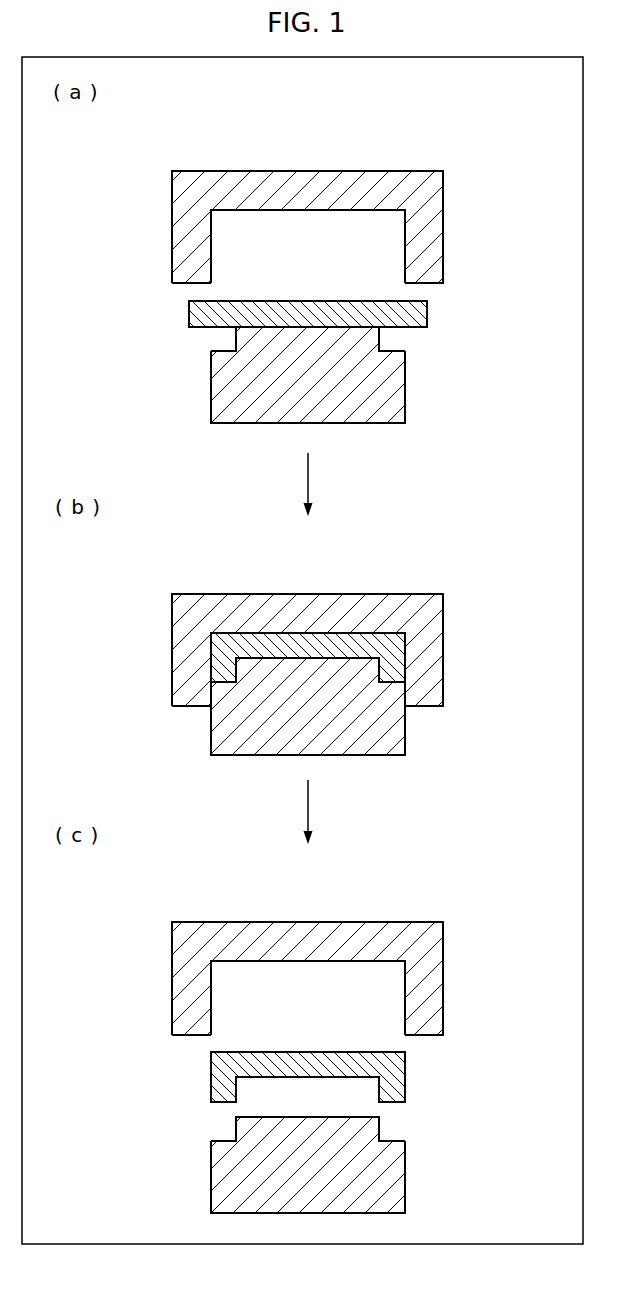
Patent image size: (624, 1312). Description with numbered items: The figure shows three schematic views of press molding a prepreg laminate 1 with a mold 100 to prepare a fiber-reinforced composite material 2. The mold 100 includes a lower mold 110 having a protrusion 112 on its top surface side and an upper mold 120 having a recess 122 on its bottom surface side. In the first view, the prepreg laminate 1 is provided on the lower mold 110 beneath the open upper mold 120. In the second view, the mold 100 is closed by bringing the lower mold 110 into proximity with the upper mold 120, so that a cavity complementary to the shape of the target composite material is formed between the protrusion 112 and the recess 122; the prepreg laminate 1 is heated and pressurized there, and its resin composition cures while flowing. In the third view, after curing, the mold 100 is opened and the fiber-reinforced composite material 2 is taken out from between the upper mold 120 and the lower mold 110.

The mold 100 is at (457, 151).
The upper mold 120 is at (443, 200).
The recess 122 is at (404, 241).
The lower mold 110 is at (405, 397).
The protrusion 112 is at (236, 338).
The prepreg laminate 1 is at (427, 313).
The fiber-reinforced composite material 2 is at (405, 1076).